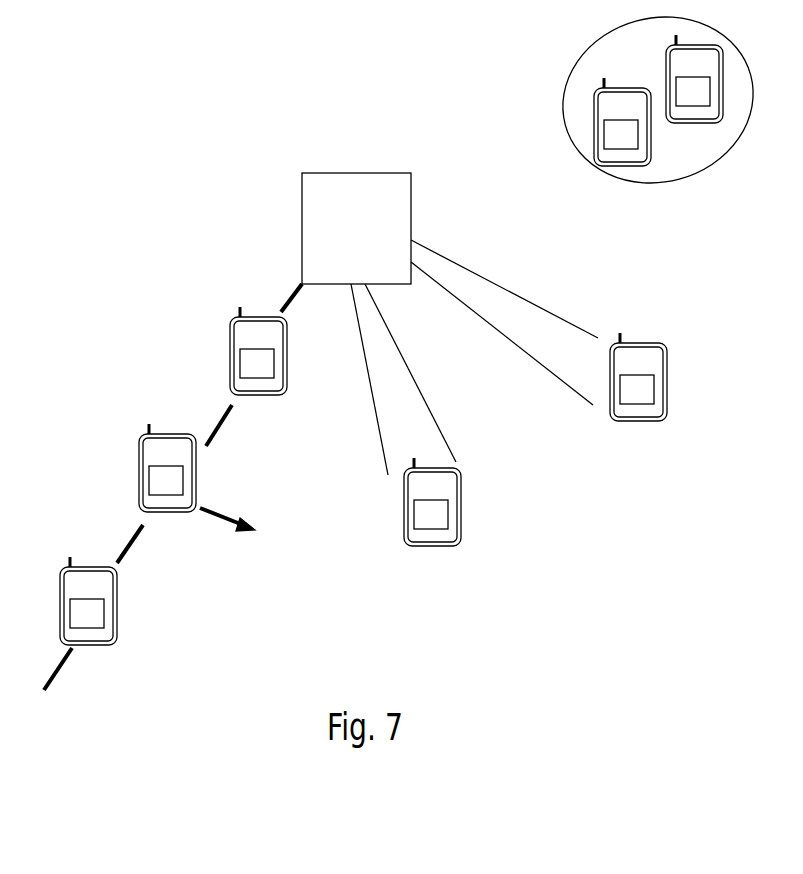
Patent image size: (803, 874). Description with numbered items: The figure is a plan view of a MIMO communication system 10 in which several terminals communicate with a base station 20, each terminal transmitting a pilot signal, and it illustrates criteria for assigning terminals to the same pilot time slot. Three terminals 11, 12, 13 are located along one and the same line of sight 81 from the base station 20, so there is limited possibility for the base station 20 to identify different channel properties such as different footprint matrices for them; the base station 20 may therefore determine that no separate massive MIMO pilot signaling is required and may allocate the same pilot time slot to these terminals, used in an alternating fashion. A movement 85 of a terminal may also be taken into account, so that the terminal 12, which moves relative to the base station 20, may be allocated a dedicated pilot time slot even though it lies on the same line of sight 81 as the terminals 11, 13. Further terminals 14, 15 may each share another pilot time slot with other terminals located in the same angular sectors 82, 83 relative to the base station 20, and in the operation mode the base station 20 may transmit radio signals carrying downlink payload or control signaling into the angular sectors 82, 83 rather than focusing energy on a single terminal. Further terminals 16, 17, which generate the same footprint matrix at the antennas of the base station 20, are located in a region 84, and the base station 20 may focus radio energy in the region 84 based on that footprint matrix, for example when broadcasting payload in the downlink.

The communication system 10 is at (60, 165).
The base station 20 is at (302, 173).
The terminal 11 is at (230, 393).
The terminal 12 is at (140, 511).
The terminal 13 is at (60, 642).
The further terminal 14 is at (405, 544).
The further terminal 15 is at (611, 419).
The further terminal 16 is at (594, 165).
The further terminal 17 is at (720, 46).
The line of sight 81 is at (58, 678).
The angular sector 82 is at (380, 443).
The angular sector 83 is at (512, 292).
The region 84 is at (697, 168).
The movement 85 is at (221, 507).